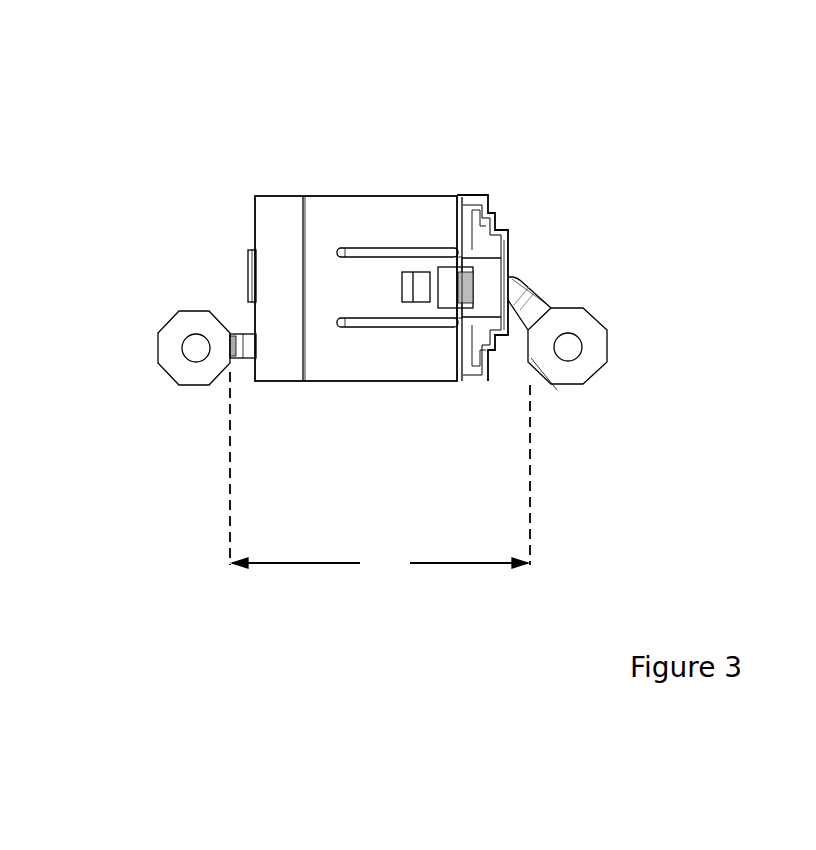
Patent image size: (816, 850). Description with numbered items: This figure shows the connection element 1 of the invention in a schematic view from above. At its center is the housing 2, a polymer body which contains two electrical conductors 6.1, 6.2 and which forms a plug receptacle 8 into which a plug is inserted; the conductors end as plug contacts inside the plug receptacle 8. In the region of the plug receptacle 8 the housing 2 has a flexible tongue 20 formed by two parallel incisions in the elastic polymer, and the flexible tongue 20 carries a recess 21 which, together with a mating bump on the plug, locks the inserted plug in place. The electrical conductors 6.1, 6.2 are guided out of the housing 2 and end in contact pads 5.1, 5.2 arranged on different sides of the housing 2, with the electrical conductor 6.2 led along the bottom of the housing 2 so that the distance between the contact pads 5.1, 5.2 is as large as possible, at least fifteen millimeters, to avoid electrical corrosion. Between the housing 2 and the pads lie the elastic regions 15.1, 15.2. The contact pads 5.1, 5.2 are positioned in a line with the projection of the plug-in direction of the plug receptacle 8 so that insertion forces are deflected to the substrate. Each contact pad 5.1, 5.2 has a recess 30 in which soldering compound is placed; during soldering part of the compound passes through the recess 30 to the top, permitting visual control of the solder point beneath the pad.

The connection element 1 is at (270, 150).
The housing 2 is at (358, 195).
The flexible tongue 20 is at (430, 310).
The recess in the flexible tongue 21 is at (422, 280).
The plug receptacle 8 is at (482, 315).
The electrical conductor 6.1 is at (243, 353).
The electrical conductor 6.2 is at (250, 273).
The elastic region 15.1 is at (245, 350).
The elastic region 15.2 is at (533, 300).
The contact pad 5.1 is at (180, 328).
The contact pad 5.2 is at (582, 315).
The recess in the contact pad 30 is at (190, 350).